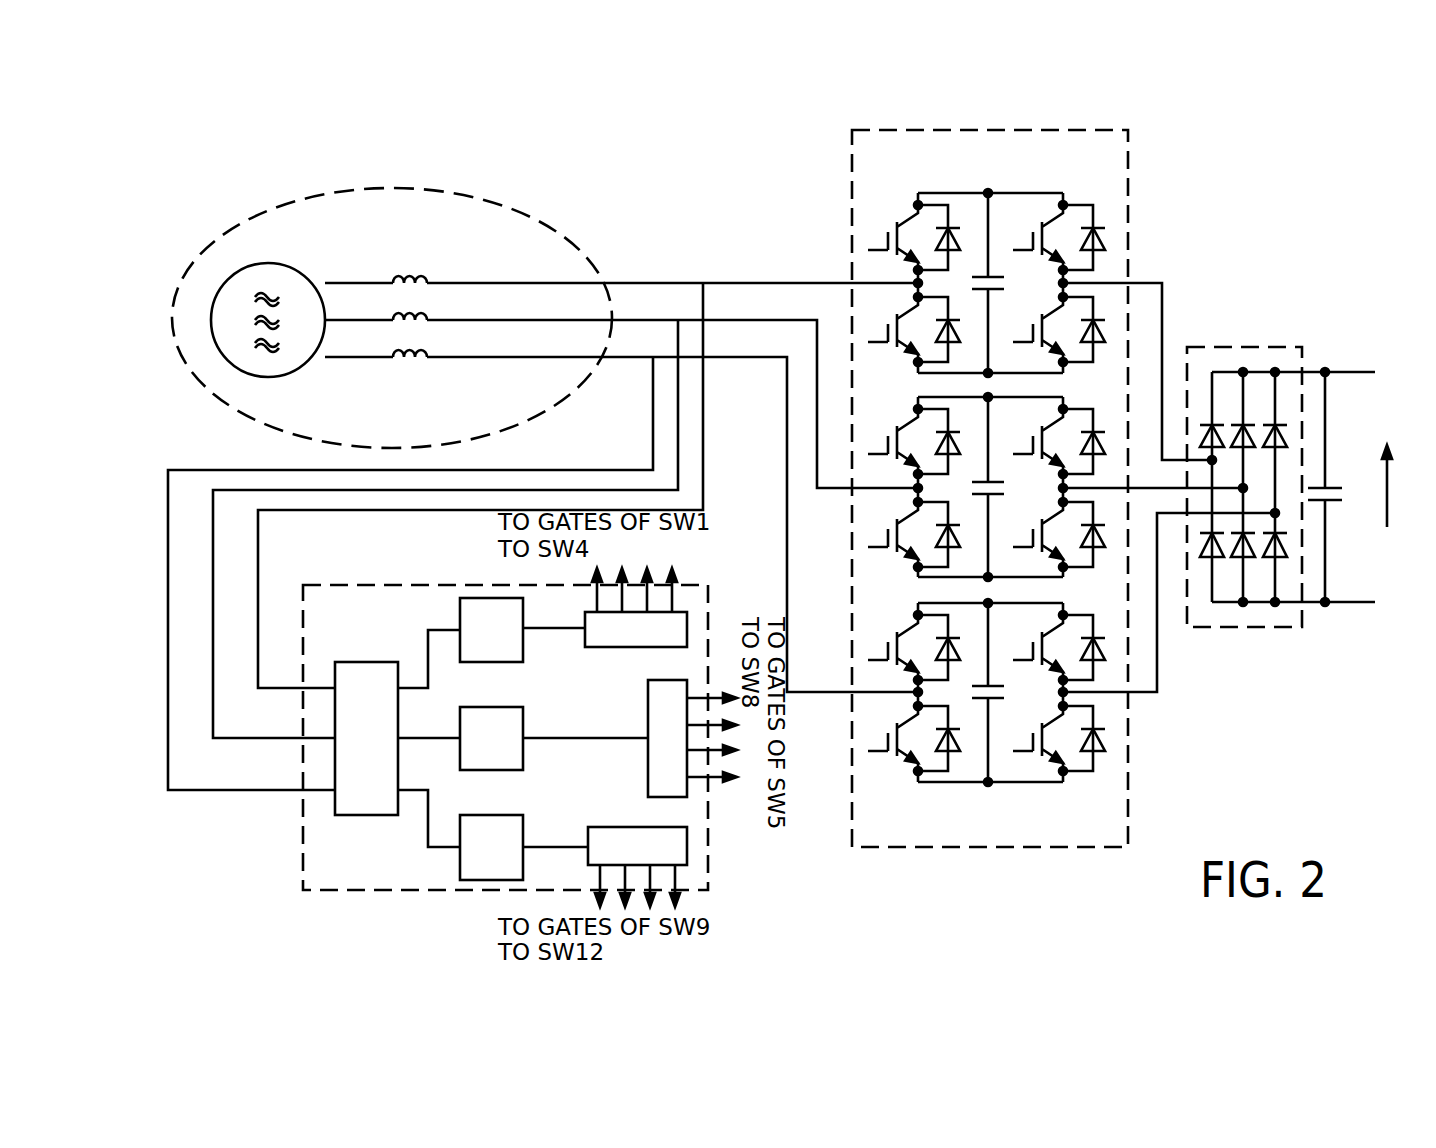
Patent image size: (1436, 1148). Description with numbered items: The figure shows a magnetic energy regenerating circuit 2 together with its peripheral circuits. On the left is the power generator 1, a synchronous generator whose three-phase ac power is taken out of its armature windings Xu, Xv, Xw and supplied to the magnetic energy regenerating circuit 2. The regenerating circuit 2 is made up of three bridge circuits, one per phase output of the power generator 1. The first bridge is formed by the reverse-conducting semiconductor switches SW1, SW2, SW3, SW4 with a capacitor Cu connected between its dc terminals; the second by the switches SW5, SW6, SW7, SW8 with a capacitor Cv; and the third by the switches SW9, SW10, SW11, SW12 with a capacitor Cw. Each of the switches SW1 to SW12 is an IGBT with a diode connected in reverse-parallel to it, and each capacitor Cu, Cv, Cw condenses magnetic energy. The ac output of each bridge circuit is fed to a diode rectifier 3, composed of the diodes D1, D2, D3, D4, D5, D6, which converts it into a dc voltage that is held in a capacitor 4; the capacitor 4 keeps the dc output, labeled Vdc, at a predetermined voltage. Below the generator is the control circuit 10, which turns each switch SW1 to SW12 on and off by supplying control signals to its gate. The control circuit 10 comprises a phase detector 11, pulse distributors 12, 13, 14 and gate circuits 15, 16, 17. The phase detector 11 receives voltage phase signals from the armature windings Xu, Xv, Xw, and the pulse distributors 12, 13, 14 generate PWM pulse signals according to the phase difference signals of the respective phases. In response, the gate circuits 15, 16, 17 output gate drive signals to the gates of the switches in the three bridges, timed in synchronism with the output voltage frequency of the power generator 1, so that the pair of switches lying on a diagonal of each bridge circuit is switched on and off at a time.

The power generator 1 is at (392, 272).
The magnetic energy regenerating circuit 2 is at (992, 128).
The diode rectifier 3 is at (1250, 347).
The capacitor 4 is at (1343, 485).
The control circuit 10 is at (303, 815).
The phase detector 11 is at (372, 662).
The pulse distributor 12 is at (466, 598).
The pulse distributor 13 is at (523, 707).
The pulse distributor 14 is at (460, 870).
The gate circuit 15 is at (690, 625).
The gate circuit 16 is at (648, 775).
The gate circuit 17 is at (687, 862).
The reverse-conducting semiconductor switch SW1 is at (910, 235).
The reverse-conducting semiconductor switch SW2 is at (1049, 237).
The reverse-conducting semiconductor switch SW3 is at (909, 336).
The reverse-conducting semiconductor switch SW4 is at (1049, 333).
The reverse-conducting semiconductor switch SW5 is at (909, 439).
The reverse-conducting semiconductor switch SW6 is at (1049, 441).
The reverse-conducting semiconductor switch SW7 is at (909, 541).
The reverse-conducting semiconductor switch SW8 is at (1049, 538).
The reverse-conducting semiconductor switch SW9 is at (909, 645).
The reverse-conducting semiconductor switch SW10 is at (1049, 647).
The reverse-conducting semiconductor switch SW11 is at (908, 746).
The reverse-conducting semiconductor switch SW12 is at (1049, 742).
The diode D1 is at (1207, 423).
The diode D2 is at (1252, 425).
The diode D3 is at (1283, 423).
The diode D4 is at (1206, 557).
The diode D5 is at (1238, 557).
The diode D6 is at (1283, 558).
The capacitor Cu is at (1008, 283).
The capacitor Cv is at (1007, 487).
The capacitor Cw is at (1010, 692).
The armature winding Xu is at (410, 261).
The armature winding Xv is at (429, 306).
The armature winding Xw is at (431, 344).
The DC voltage Vdc is at (1385, 503).